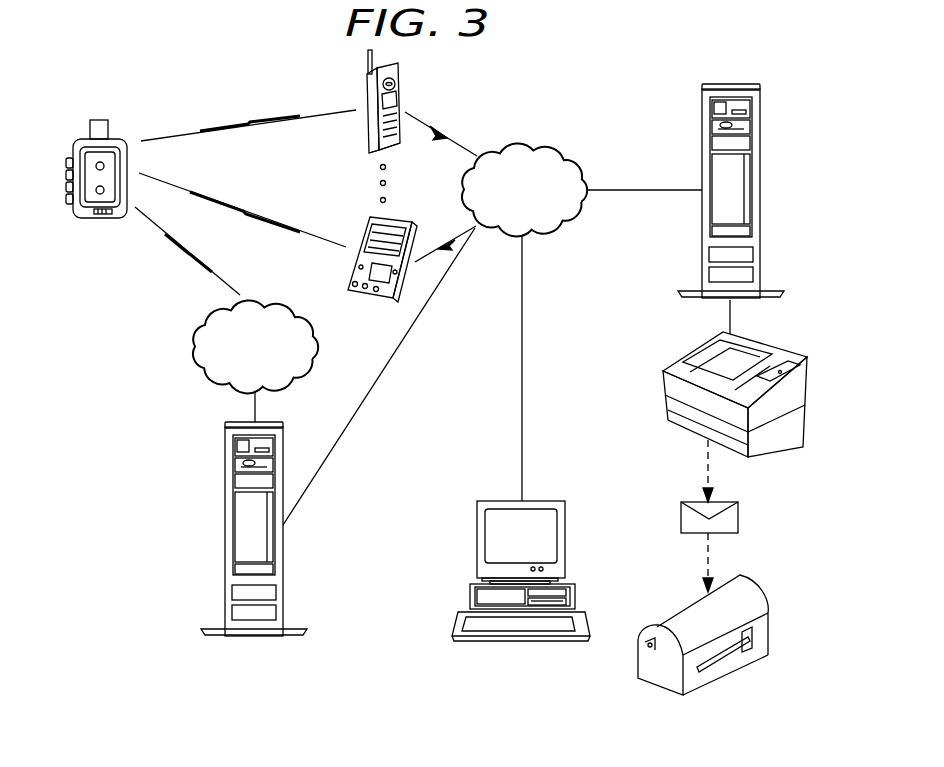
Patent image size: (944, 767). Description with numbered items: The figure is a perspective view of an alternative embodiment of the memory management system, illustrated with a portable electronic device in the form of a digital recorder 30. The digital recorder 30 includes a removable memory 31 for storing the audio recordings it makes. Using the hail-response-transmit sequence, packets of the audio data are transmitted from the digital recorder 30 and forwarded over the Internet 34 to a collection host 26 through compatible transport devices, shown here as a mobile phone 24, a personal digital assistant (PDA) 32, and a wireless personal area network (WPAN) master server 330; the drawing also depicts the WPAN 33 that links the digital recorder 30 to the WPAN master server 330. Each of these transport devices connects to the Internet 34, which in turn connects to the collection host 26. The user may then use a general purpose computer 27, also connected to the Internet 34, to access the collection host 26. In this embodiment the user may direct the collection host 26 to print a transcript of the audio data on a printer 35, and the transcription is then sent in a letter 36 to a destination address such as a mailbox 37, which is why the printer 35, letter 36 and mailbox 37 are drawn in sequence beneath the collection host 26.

The mobile phone 24 is at (368, 92).
The collection host 26 is at (760, 182).
The general purpose computer 27 is at (565, 553).
The digital recorder 30 is at (97, 219).
The removable memory 31 is at (97, 119).
The personal digital assistant (PDA) 32 is at (369, 226).
The wireless personal area network (WPAN) 33 is at (193, 352).
The Internet 34 is at (553, 152).
The printer 35 is at (776, 437).
The letter 36 is at (738, 518).
The mailbox 37 is at (733, 675).
The wireless personal area network (WPAN) master server 330 is at (225, 545).